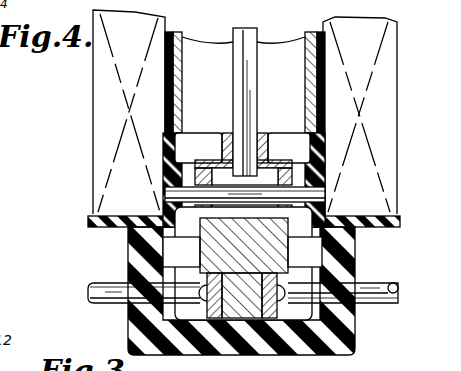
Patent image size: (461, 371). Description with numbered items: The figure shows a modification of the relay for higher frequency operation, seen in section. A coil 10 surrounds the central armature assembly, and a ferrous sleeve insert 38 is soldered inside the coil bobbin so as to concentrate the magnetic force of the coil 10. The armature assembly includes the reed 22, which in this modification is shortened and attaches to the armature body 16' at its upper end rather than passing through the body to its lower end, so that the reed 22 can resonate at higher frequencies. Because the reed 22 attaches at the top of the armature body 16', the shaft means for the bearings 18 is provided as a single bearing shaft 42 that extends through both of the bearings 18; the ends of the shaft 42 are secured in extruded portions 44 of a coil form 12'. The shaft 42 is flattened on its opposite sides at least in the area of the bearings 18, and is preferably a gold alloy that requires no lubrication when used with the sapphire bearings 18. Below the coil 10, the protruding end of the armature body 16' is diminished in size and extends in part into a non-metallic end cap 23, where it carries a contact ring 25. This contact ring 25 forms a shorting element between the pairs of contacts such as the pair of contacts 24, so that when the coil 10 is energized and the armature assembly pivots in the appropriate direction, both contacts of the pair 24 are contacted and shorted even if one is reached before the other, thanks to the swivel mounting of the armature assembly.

The coil 10 is at (398, 97).
The coil form 12' is at (246, 233).
The recess 16' is at (198, 148).
The bearings 18 is at (196, 176).
The reed 22 is at (258, 80).
The non-metallic end cap 23 is at (357, 344).
The pair of contacts 24 is at (90, 305).
The contact ring 25 is at (278, 312).
The ferrous sleeve insert 38 is at (181, 86).
The bearing shaft 42 is at (312, 194).
The extruded portions 44 is at (301, 168).